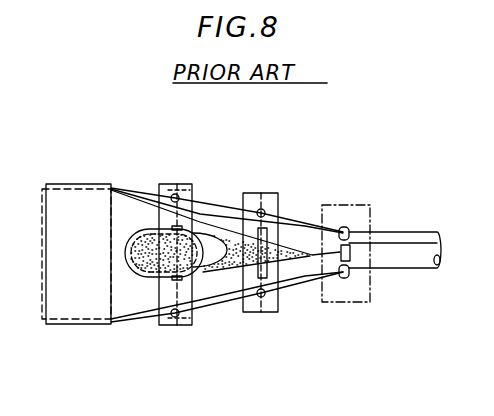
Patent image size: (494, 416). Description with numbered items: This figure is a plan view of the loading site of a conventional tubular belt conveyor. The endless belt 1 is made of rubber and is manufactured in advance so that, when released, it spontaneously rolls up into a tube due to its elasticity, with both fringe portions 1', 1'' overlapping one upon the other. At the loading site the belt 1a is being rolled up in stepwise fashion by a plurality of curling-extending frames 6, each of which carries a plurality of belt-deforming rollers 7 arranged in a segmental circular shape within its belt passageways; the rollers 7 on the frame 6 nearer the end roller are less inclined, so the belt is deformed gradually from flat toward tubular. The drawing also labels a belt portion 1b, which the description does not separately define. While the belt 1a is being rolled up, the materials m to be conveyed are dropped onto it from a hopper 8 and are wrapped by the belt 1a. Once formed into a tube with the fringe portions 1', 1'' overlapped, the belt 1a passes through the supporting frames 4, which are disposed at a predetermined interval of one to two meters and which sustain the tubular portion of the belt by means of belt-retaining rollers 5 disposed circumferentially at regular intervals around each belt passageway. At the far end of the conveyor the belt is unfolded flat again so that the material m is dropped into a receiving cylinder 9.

The endless belt 1 is at (401, 219).
The belt 1a is at (409, 265).
The optical fiber 1b is at (148, 193).
The fringe portion 1' is at (227, 203).
The fringe portion 1'' is at (227, 303).
The supporting frame 4 is at (356, 215).
The belt-retaining roller 5 is at (352, 252).
The curling-extending frame 6 is at (185, 185).
The belt-deforming roller 7 is at (172, 187).
The hopper 8 is at (140, 280).
The receiving cylinder 9 is at (227, 282).
The materials to be conveyed m is at (140, 262).